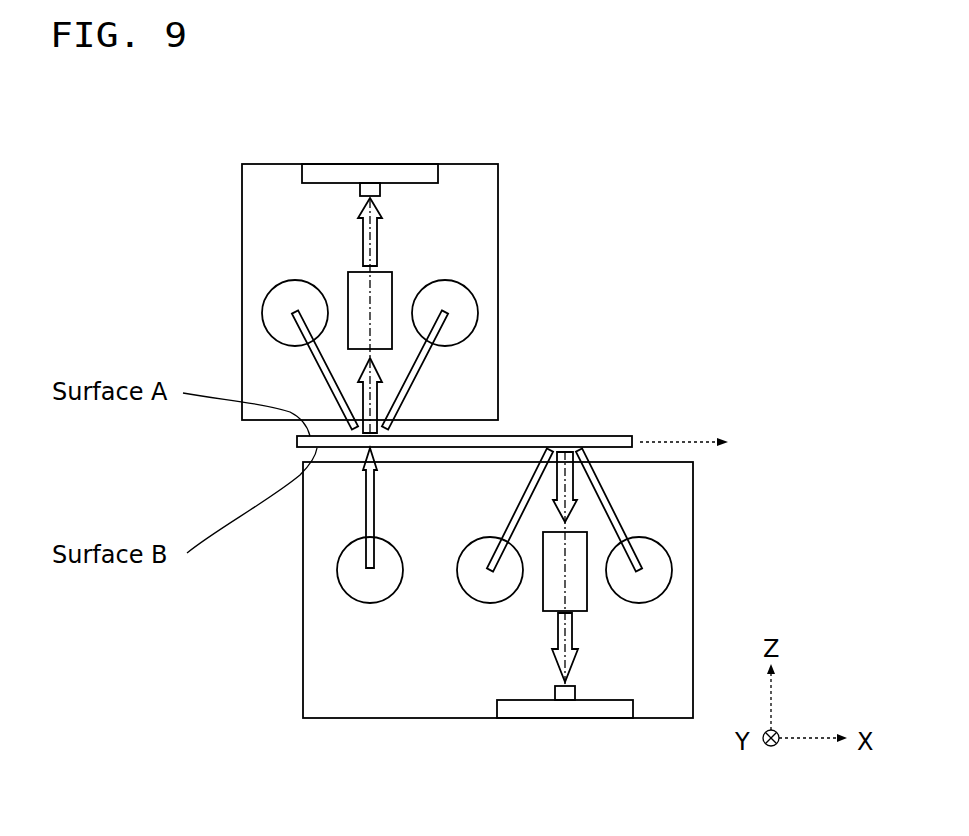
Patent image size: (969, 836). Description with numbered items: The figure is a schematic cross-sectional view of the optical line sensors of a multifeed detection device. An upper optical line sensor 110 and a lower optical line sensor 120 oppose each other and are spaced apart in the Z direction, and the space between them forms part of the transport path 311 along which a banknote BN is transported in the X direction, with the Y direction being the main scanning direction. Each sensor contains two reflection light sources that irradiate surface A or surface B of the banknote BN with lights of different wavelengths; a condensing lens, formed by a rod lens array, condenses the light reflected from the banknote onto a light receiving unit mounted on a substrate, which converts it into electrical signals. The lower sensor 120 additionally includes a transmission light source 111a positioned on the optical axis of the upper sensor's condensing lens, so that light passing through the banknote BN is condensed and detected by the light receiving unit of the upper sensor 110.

The optical line sensor 110 is at (242, 220).
The second (lower) processing unit 120 is at (303, 625).
The transmission light source 111a is at (371, 592).
The transport path 311 is at (305, 454).
The banknote BN is at (608, 438).